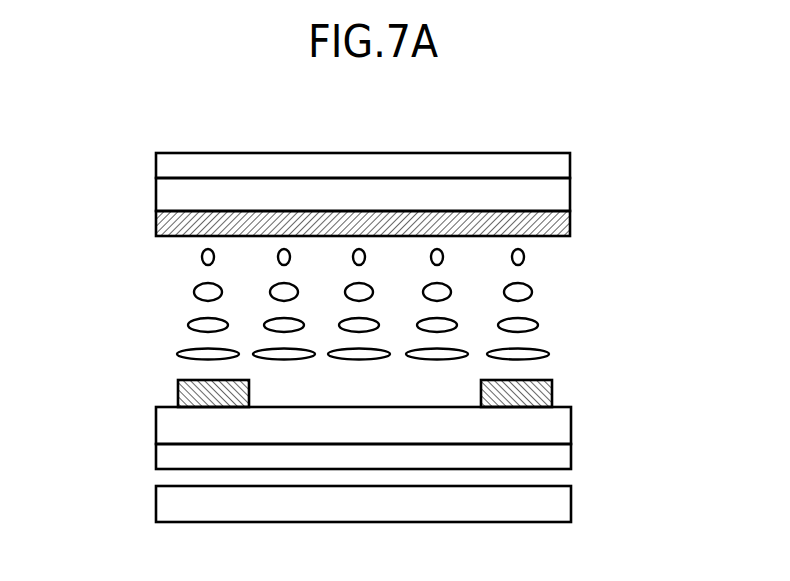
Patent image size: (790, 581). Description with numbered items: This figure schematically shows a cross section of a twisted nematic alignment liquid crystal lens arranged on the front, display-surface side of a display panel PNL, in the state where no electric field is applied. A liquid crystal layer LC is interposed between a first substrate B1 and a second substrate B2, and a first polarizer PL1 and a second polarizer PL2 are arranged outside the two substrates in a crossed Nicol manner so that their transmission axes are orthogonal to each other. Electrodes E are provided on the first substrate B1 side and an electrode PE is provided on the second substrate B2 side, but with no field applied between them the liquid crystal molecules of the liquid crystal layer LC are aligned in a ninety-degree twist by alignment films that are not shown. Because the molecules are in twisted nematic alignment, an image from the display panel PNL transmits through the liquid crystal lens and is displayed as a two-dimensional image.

The second polarizer PL2 is at (570, 163).
The second substrate B2 is at (570, 198).
The electrode PE is at (570, 230).
The liquid crystal layer LC is at (177, 318).
The electrodes E is at (178, 396).
The first substrate B1 is at (571, 423).
The first polarizer PL1 is at (571, 458).
The display panel PNL is at (571, 504).